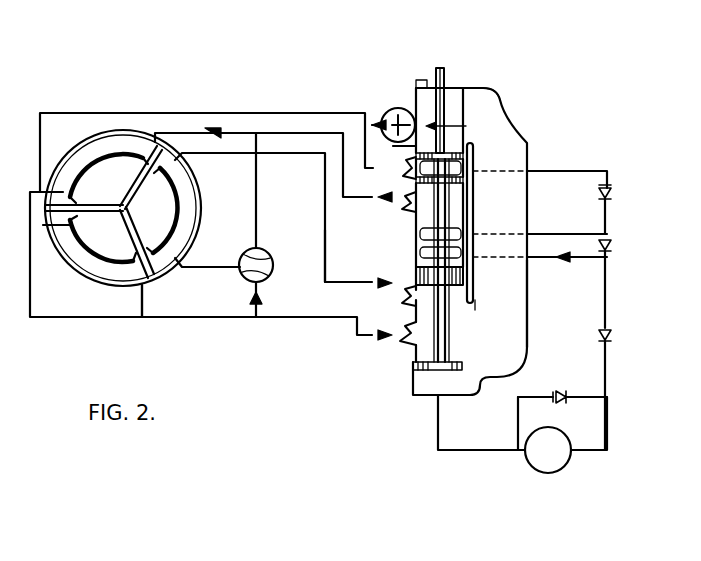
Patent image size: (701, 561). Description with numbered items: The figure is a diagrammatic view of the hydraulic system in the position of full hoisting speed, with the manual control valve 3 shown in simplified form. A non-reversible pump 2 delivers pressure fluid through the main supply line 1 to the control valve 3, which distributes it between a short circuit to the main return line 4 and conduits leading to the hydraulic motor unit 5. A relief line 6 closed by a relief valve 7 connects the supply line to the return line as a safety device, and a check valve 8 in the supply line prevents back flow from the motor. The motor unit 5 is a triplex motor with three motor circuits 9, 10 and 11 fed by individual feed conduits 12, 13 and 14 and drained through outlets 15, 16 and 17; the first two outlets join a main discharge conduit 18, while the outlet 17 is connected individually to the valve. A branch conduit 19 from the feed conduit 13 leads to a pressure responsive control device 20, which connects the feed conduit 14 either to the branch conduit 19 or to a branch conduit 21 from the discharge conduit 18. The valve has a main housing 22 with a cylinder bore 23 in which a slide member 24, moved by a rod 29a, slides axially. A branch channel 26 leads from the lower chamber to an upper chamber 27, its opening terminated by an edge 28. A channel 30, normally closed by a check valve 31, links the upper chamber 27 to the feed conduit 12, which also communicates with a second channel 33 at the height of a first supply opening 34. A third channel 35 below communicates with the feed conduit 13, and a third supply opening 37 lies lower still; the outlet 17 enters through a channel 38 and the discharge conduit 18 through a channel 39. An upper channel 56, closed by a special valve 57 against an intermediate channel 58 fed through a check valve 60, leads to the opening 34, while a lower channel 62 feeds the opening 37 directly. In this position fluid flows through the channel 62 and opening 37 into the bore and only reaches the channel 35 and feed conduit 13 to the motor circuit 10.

The main supply line 1 is at (609, 387).
The non-reversible pump 2 is at (553, 465).
The manual control valve 3 is at (410, 345).
The main return line 4 is at (437, 428).
The hydraulic motor unit 5 is at (95, 140).
The relief line 6 is at (518, 424).
The relief valve 7 is at (561, 392).
The check valve 8 is at (613, 337).
The first motor circuit 9 is at (103, 239).
The second motor circuit 10 is at (109, 178).
The third motor circuit 11 is at (157, 210).
The feed conduit 12 is at (196, 114).
The feed conduit 13 is at (274, 133).
The feed conduit 14 is at (193, 269).
The outlet 15 is at (140, 298).
The outlet 16 is at (35, 278).
The outlet 17 is at (324, 230).
The main discharge conduit 18 is at (267, 331).
The branch conduit 19 is at (258, 177).
The pressure responsive control device 20 is at (271, 274).
The branch conduit 21 is at (252, 287).
The main housing 22 is at (528, 316).
The cylinder bore 23 is at (480, 284).
The slide member 24 is at (438, 353).
The branch channel 26 is at (510, 147).
The upper chamber 27 is at (478, 110).
The edge 28 is at (468, 140).
The rod 29a is at (440, 80).
The channel 30 is at (398, 112).
The check valve 31 is at (424, 85).
The second channel 33 is at (404, 172).
The first supply channel opening 34 is at (473, 155).
The third channel 35 is at (406, 205).
The third supply opening 37 is at (415, 256).
The channel 38 is at (405, 292).
The channel 39 is at (400, 342).
The upper channel 56 is at (577, 170).
The special valve 57 is at (612, 196).
The intermediate channel 58 is at (555, 236).
The check valve 60 is at (613, 247).
The lower channel 62 is at (565, 259).